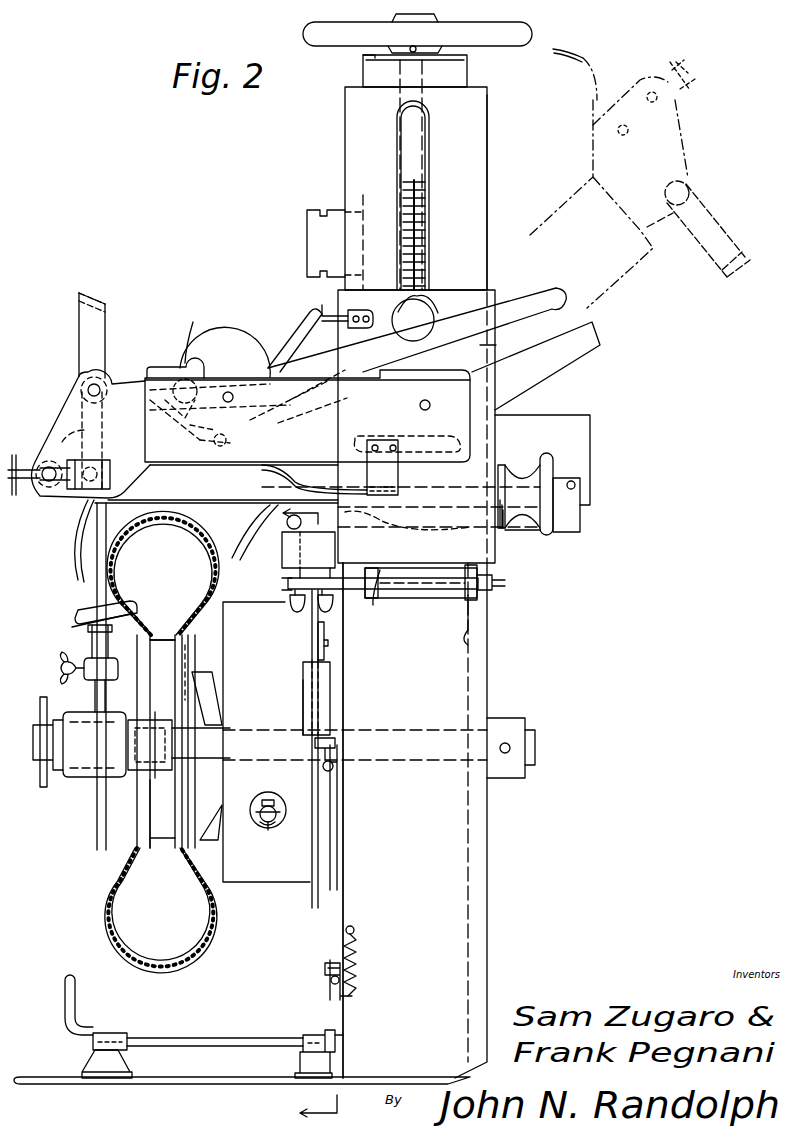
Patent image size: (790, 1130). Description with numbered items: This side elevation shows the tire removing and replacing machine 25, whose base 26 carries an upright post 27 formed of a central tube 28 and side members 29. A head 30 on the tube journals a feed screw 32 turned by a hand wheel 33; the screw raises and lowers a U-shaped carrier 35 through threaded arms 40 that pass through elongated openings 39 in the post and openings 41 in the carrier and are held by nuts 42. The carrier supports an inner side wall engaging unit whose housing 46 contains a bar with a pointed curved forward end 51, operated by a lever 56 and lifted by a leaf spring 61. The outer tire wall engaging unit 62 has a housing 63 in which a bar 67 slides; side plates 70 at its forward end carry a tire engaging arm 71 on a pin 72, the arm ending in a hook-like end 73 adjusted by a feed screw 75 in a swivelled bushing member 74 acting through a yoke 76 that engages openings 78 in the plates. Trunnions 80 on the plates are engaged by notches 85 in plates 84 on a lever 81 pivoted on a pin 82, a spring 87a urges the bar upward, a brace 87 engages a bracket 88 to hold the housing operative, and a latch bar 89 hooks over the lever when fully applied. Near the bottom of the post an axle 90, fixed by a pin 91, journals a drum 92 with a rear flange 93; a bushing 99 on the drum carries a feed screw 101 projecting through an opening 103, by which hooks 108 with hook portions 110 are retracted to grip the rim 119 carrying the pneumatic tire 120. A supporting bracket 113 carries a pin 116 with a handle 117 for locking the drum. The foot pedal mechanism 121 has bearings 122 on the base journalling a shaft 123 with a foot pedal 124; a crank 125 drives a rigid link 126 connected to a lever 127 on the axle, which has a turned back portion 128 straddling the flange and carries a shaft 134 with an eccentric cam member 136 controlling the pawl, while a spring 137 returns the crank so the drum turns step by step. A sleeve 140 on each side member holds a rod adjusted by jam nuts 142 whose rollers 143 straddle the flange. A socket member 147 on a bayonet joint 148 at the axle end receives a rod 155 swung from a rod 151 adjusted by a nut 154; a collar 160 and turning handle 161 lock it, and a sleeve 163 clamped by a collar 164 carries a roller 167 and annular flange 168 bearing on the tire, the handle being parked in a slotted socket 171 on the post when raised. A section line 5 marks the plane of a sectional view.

The section line 5 is at (302, 812).
The tire removing and replacing machine 25 is at (504, 651).
The base 26 is at (202, 1085).
The post 27 is at (497, 198).
The tube 28 is at (468, 74).
The side members 29 is at (480, 231).
The head 30 is at (363, 62).
The feed screw 32 is at (418, 174).
The hand wheel 33 is at (522, 30).
The carrier 35 is at (505, 352).
The elongated openings 39 is at (423, 232).
The threaded arms 40 is at (396, 312).
The openings 41 is at (488, 590).
The nut 42 is at (434, 310).
The housing 46 is at (593, 433).
The curved forward end 51 is at (250, 523).
The lever 56 is at (570, 350).
The leaf spring 61 is at (524, 528).
The outer tire wall engaging unit 62 is at (195, 333).
The housing 63 is at (609, 292).
The bar 67 is at (330, 418).
The side plates 70 is at (683, 158).
The tire engaging arm 71 is at (53, 458).
The pin 72 is at (100, 380).
The hook-like end 73 is at (598, 57).
The bushing member 74 is at (42, 452).
The feed screw 75 is at (45, 488).
The yoke 76 is at (100, 458).
The opening 78 is at (104, 468).
The trunnion 80 is at (192, 410).
The lever 81 is at (560, 290).
The pin 82 is at (233, 397).
The plates 84 is at (222, 336).
The notch 85 is at (205, 362).
The brace 87 is at (300, 332).
The spring 87a is at (285, 488).
The bracket 88 is at (324, 308).
The latch bar 89 is at (733, 228).
The axle 90 is at (220, 731).
The pin 91 is at (508, 742).
The drum 92 is at (233, 882).
The flange 93 is at (310, 630).
The bushing 99 is at (255, 818).
The feed screw 101 is at (268, 828).
The opening 103 is at (274, 830).
The hooks 108 is at (222, 682).
The hook portion 110 is at (188, 672).
The supporting bracket 113 is at (286, 558).
The pin 116 is at (290, 578).
The handle 117 is at (290, 528).
The rim 119 is at (175, 796).
The pneumatic tire 120 is at (115, 942).
The foot pedal mechanism 121 is at (348, 1034).
The bearings 122 is at (125, 1066).
The shaft 123 is at (205, 1040).
The foot pedal 124 is at (78, 1012).
The crank 125 is at (345, 1002).
The rigid link 126 is at (340, 892).
The lever 127 is at (330, 700).
The turned back portion 128 is at (303, 712).
The shaft 134 is at (328, 657).
The eccentric cam member 136 is at (338, 738).
The spring 137 is at (352, 958).
The sleeve 140 is at (412, 590).
The jam nuts 142 is at (415, 572).
The rollers 143 is at (300, 612).
The socket member 147 is at (98, 778).
The bayonet joint 148 is at (158, 712).
The rod 151 is at (215, 487).
The nut 154 is at (545, 456).
The rod 155 is at (95, 583).
The collar 160 is at (63, 778).
The turning handle 161 is at (40, 714).
The sleeve 163 is at (90, 650).
The collar 164 is at (86, 680).
The roller 167 is at (80, 616).
The annular flange 168 is at (72, 628).
The slotted socket 171 is at (310, 243).